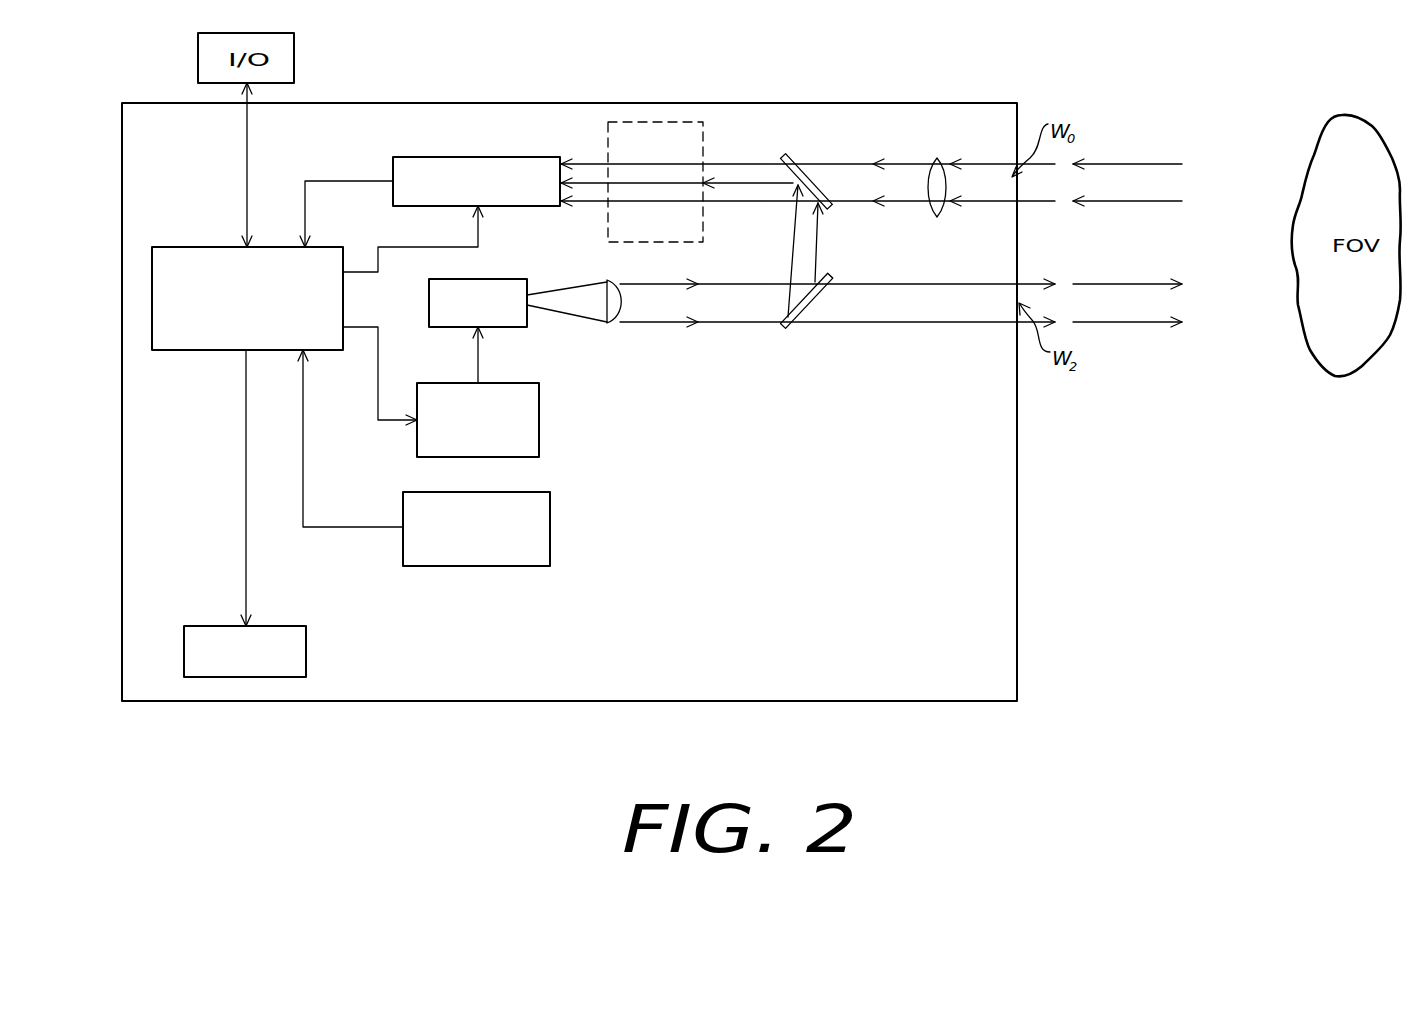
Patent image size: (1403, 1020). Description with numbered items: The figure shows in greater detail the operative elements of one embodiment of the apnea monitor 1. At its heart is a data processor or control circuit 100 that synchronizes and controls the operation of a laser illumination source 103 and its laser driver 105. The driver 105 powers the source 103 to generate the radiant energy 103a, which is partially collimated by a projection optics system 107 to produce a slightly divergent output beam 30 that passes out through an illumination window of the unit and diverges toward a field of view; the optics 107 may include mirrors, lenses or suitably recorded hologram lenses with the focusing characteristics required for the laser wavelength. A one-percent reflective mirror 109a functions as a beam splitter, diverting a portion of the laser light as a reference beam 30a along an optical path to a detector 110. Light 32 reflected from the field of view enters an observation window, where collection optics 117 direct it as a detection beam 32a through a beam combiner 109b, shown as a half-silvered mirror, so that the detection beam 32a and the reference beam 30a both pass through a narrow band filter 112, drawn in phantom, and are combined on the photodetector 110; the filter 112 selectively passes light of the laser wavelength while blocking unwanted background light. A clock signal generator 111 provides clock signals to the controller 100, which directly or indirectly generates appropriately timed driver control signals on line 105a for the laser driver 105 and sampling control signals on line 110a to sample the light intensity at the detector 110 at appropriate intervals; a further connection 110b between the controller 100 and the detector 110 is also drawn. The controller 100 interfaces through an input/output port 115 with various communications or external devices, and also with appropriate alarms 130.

The apnea monitor 1 is at (968, 82).
The output beam 30 is at (1224, 318).
The reference beam 30a is at (773, 184).
The reflected light 32 is at (1122, 164).
The detection beam 32a is at (738, 163).
The data processor or control circuit 100 is at (196, 247).
The laser illumination source 103 is at (481, 279).
The radiant energy 103a is at (562, 313).
The laser driver 105 is at (506, 383).
The driver control signal line 105a is at (380, 355).
The projection optics system 107 is at (610, 323).
The reflective mirror 109a is at (785, 327).
The beam combiner 109b is at (786, 162).
The detector 110 is at (484, 157).
The sampling control signal line 110a is at (424, 246).
The D/A control line 110b is at (307, 206).
The clock signal generator 111 is at (450, 492).
The narrow band filter 112 is at (703, 128).
The input/output port 115 is at (248, 150).
The collection optics 117 is at (930, 218).
The alarms 130 is at (280, 626).